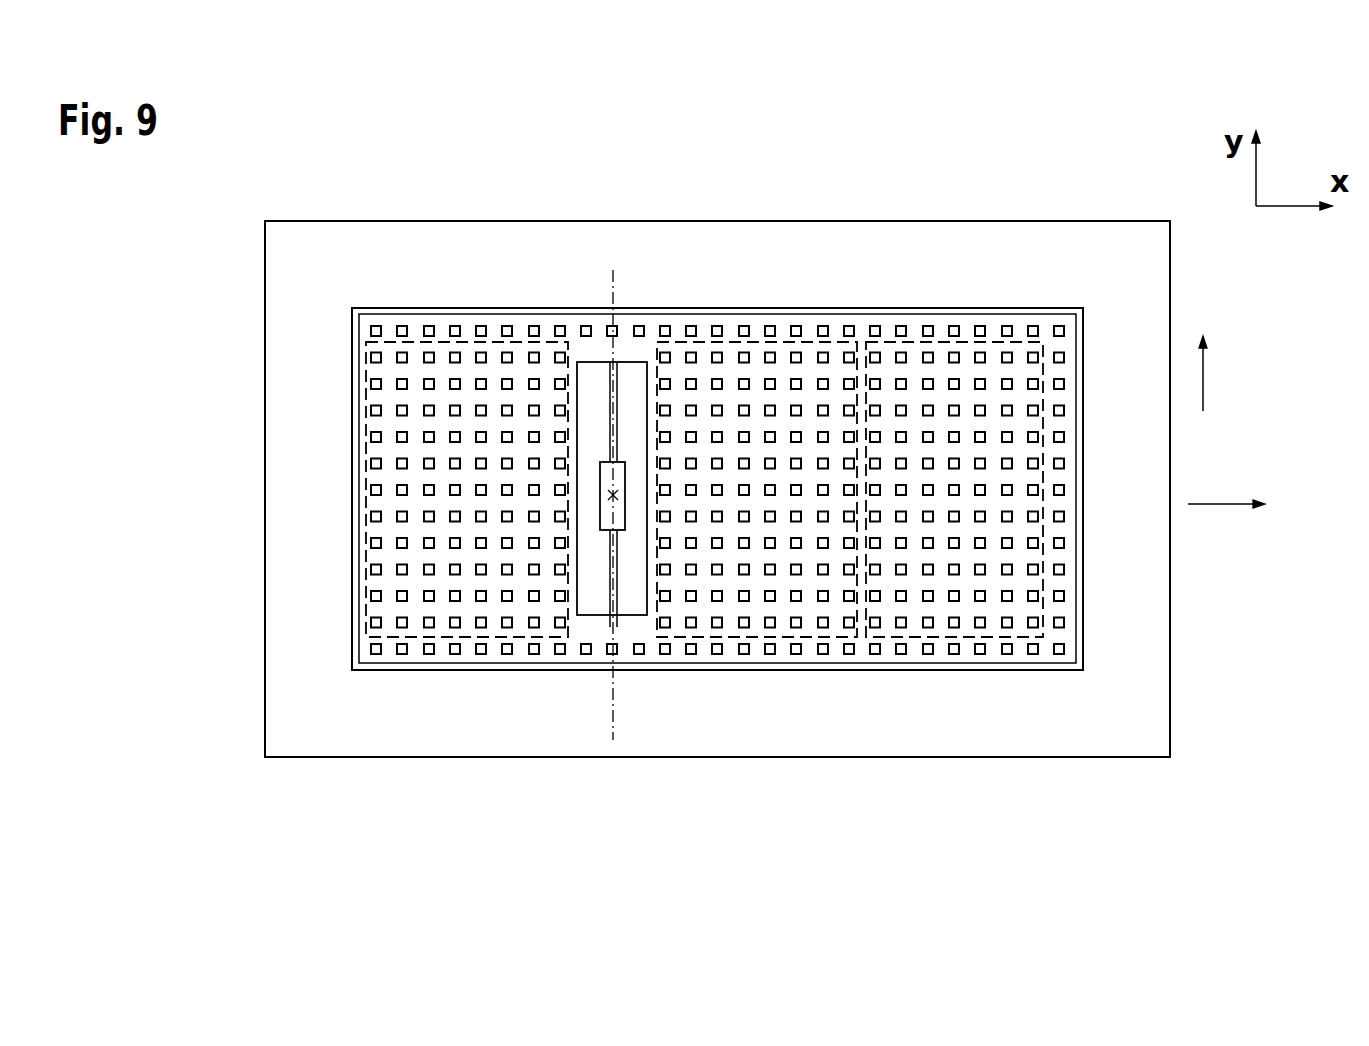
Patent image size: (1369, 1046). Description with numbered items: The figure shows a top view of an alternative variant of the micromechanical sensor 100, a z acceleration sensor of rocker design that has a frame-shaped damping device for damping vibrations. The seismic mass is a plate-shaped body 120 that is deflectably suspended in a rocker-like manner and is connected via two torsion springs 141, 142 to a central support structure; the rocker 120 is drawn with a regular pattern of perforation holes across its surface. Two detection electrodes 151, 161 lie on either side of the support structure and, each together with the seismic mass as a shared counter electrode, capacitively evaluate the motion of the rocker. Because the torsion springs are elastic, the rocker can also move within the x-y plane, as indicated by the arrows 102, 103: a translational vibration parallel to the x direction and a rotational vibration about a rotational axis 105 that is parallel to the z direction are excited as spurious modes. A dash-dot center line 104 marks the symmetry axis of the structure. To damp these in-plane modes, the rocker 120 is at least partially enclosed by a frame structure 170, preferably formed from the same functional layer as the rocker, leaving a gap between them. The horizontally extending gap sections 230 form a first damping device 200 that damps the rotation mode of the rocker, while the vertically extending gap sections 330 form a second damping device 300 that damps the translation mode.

The micromechanical sensor 100 is at (717, 490).
The arrow indicating in-plane deflection 102 is at (1203, 372).
The arrow indicating in-plane deflection 103 is at (1226, 504).
The center line 104 is at (613, 715).
The rotational axis 105 is at (600, 496).
The plate-shaped body 120 is at (358, 602).
The torsion spring 141 is at (577, 490).
The torsion spring 142 is at (607, 590).
The detection electrode 151 is at (443, 342).
The detection electrode 161 is at (783, 342).
The frame structure 170 is at (1170, 677).
The first damping device 200 is at (717, 490).
The gap section 230 is at (1008, 314).
The second damping device 300 is at (333, 382).
The gap section 330 is at (717, 395).